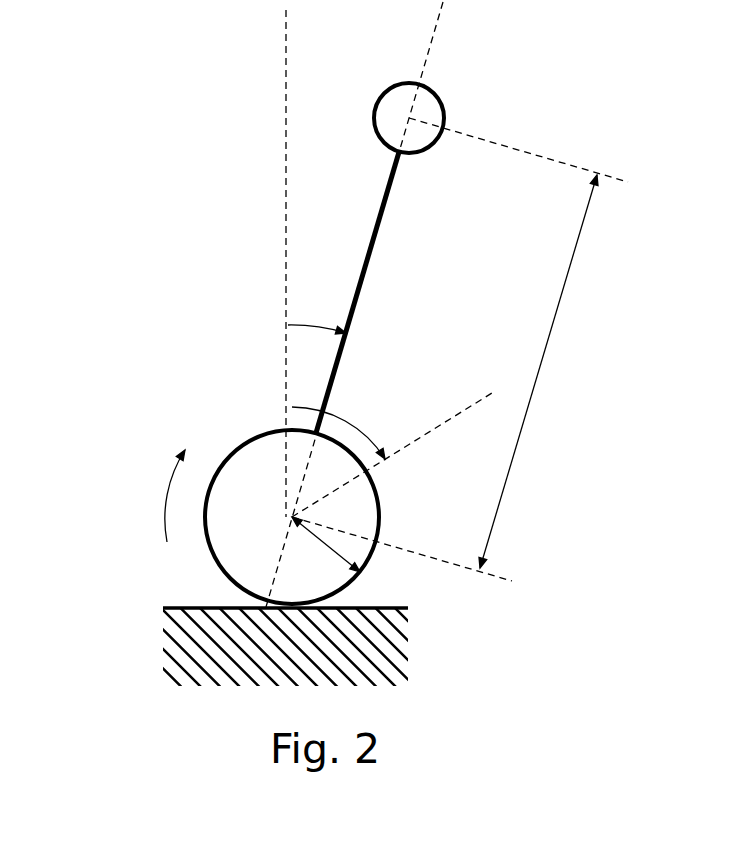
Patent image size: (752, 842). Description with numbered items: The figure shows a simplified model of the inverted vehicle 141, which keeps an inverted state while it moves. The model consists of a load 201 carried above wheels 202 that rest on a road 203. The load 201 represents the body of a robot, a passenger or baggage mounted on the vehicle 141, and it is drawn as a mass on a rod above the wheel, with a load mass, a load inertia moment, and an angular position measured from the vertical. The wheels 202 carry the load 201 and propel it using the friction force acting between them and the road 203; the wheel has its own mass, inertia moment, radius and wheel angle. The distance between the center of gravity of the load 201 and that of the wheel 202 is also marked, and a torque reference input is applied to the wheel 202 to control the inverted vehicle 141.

The vehicle 141 is at (175, 172).
The load 201 is at (437, 97).
The wheels 202 is at (225, 460).
The road 203 is at (163, 607).